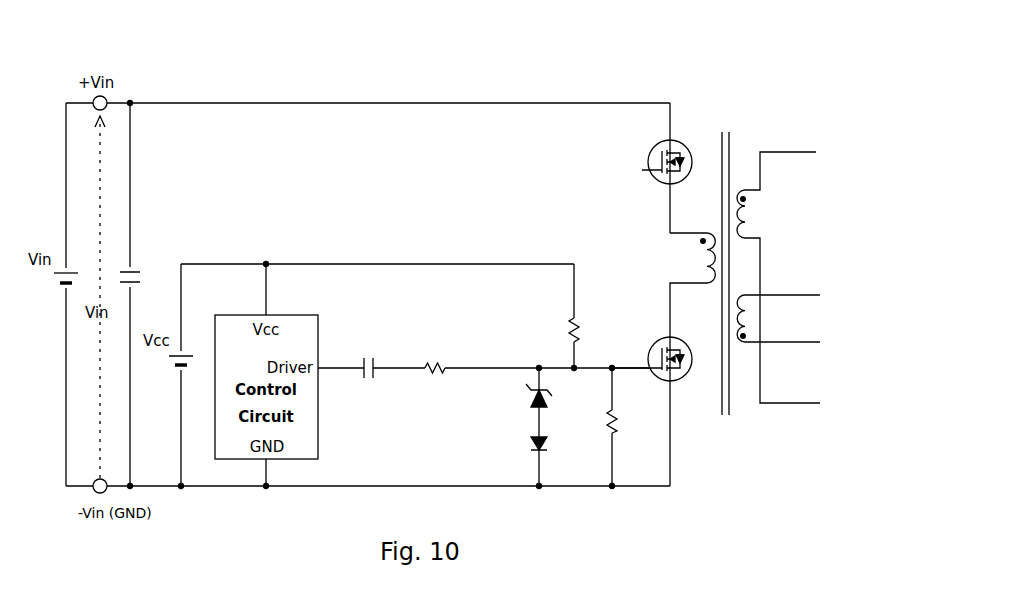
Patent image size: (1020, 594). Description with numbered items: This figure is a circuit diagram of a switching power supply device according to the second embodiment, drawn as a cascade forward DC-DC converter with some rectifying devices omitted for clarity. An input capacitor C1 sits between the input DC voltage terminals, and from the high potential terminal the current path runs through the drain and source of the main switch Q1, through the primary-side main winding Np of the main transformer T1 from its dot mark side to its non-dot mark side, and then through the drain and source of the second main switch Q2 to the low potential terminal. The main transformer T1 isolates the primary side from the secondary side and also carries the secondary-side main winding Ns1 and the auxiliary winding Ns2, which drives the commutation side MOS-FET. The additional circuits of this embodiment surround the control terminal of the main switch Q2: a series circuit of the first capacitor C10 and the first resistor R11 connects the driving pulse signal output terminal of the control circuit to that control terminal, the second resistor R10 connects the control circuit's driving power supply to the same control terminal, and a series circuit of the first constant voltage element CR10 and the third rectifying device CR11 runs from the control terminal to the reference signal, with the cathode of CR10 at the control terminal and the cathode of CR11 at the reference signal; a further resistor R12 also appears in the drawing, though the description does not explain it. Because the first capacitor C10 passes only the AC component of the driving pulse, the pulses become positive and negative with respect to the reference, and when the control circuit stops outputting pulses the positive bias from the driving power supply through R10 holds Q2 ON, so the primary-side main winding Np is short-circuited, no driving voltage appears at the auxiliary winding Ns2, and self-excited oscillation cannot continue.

The input capacitor C1 is at (137, 294).
The first capacitor C10 is at (372, 380).
The second resistor R10 is at (554, 316).
The first resistor R11 is at (435, 382).
The gate pull-down resistor R12 is at (592, 427).
The first constant voltage element CR10 is at (514, 402).
The third rectifying device CR11 is at (511, 461).
The main switch Q1 is at (667, 168).
The second main switch Q2 is at (652, 403).
The main transformer T1 is at (724, 259).
The primary-side main winding Np is at (681, 285).
The secondary-side main winding Ns1 is at (776, 223).
The auxiliary winding Ns2 is at (778, 349).